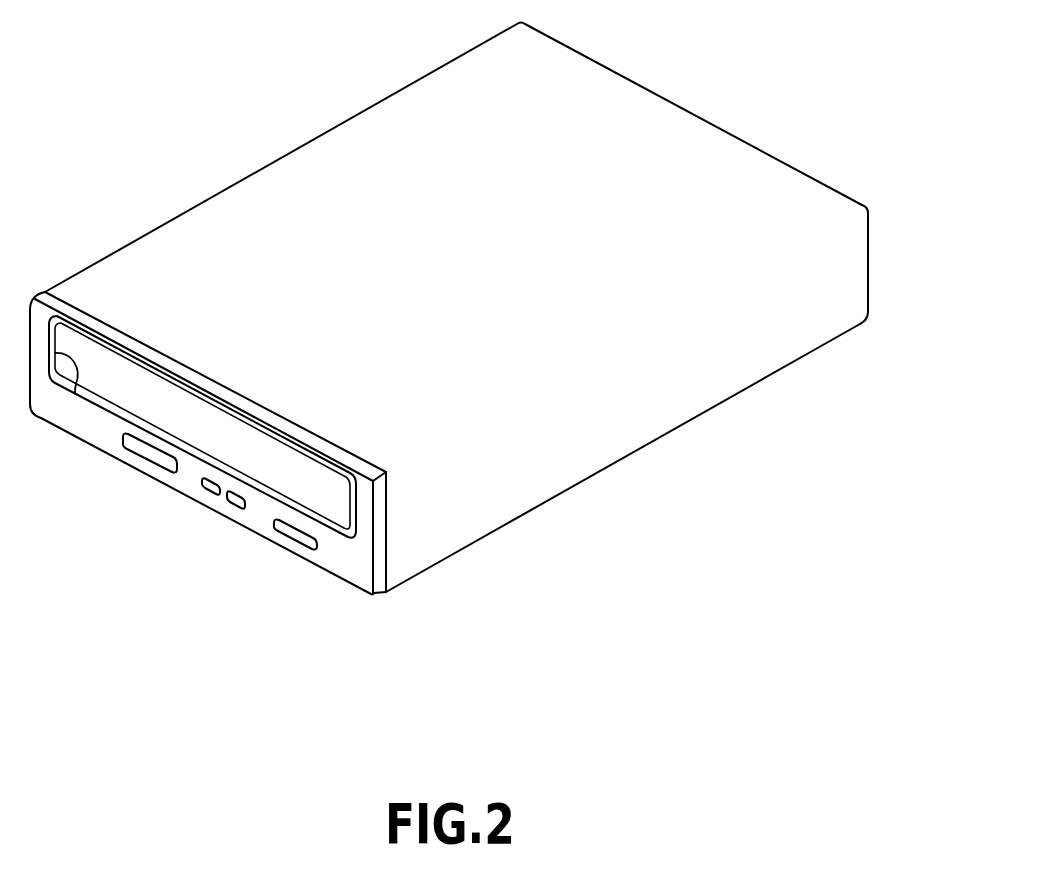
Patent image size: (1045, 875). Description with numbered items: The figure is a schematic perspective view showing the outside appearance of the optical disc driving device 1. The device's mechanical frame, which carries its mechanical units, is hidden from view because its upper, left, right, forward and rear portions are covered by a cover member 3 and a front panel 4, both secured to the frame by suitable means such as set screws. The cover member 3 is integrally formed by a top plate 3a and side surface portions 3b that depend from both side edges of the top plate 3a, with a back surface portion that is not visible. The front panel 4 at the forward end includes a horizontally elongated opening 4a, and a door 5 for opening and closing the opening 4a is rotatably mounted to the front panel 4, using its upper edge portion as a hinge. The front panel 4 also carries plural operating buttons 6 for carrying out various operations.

The optical disc driving device 1 is at (274, 124).
The cover member 3 is at (428, 548).
The top plate 3a is at (637, 110).
The side surface portion 3b is at (788, 342).
The front panel 4 is at (342, 563).
The opening 4a is at (75, 393).
The door 5 is at (225, 436).
The operating buttons 6 is at (141, 449).